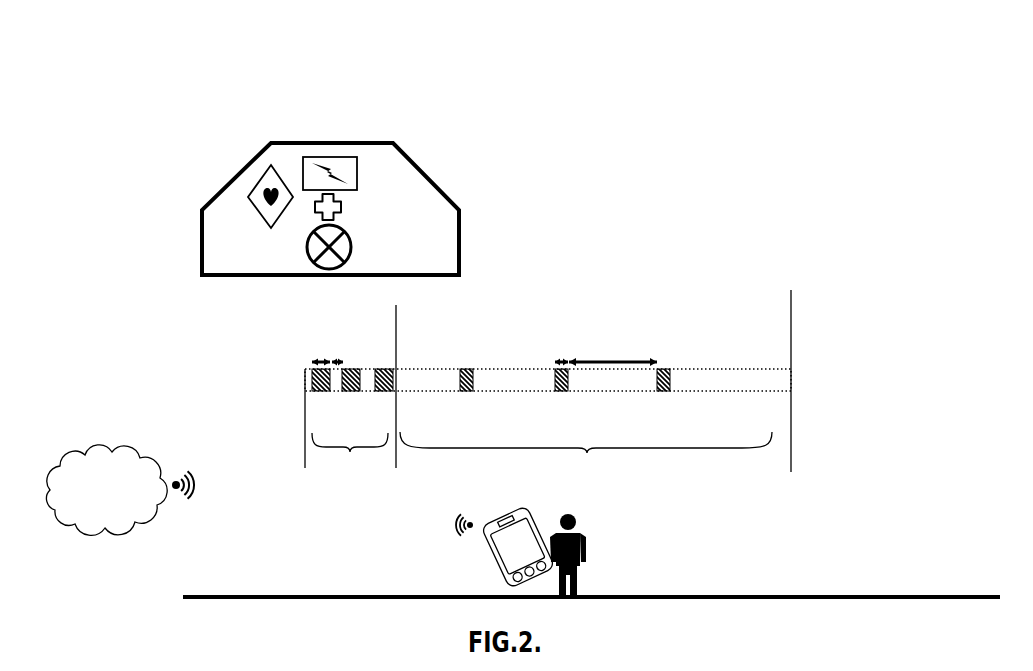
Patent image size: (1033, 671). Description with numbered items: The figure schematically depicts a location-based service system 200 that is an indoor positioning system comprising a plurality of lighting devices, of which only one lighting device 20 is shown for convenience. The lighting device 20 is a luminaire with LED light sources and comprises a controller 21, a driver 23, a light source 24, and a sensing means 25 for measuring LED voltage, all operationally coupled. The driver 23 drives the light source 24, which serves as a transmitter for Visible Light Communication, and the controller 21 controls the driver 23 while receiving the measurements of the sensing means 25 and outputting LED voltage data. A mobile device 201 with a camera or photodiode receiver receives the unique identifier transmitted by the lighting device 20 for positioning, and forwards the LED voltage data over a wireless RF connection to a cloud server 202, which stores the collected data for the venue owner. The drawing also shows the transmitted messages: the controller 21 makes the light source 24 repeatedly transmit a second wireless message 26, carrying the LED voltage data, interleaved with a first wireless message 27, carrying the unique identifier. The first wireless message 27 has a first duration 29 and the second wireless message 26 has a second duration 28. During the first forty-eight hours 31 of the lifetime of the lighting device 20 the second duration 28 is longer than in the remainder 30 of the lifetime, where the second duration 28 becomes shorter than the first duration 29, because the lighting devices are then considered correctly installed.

The location-based service system 200 is at (184, 84).
The lighting device 20 is at (172, 173).
The controller 21 is at (272, 172).
The driver 23 is at (355, 170).
The light source 24 is at (308, 251).
The sensing means 25 is at (342, 208).
The second wireless message 26 is at (318, 393).
The first wireless message 27 is at (338, 393).
The second duration 28 is at (319, 358).
The first duration 29 is at (337, 358).
The remainder of the lifetime 30 is at (586, 456).
The first forty-eight hours of the lifetime 31 is at (350, 457).
The mobile device 201 is at (554, 509).
The cloud server 202 is at (168, 437).